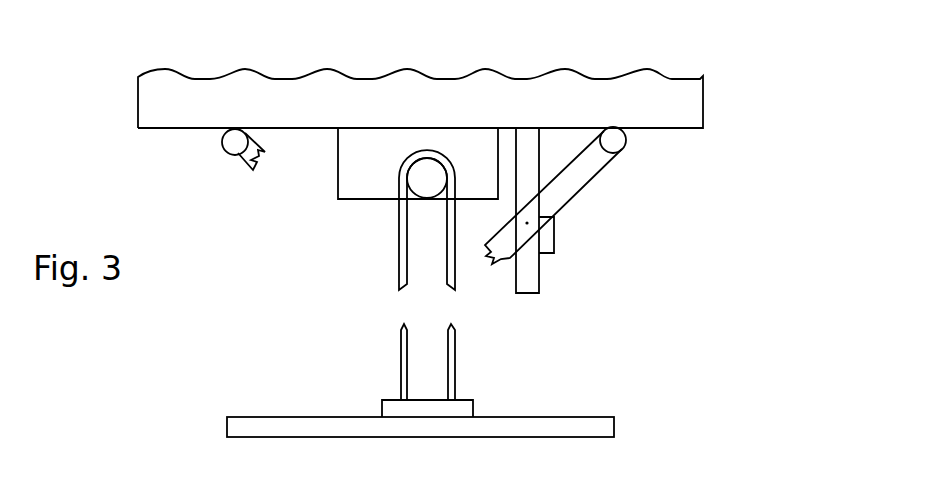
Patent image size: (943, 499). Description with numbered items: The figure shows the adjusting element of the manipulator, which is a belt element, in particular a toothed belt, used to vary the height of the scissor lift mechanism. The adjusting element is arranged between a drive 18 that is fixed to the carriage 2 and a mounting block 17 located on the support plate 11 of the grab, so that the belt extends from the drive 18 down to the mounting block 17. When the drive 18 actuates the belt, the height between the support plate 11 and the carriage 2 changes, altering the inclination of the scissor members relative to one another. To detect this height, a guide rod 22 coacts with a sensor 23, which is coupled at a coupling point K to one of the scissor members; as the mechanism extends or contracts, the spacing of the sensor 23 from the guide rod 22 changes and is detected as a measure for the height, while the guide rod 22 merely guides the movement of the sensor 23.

The carriage 2 is at (704, 98).
The support plate 11 is at (567, 427).
The mounting block 17 is at (381, 409).
The drive 18 is at (338, 169).
The guide rod 22 is at (530, 274).
The sensor 23 is at (548, 244).
The coupling point K is at (527, 223).